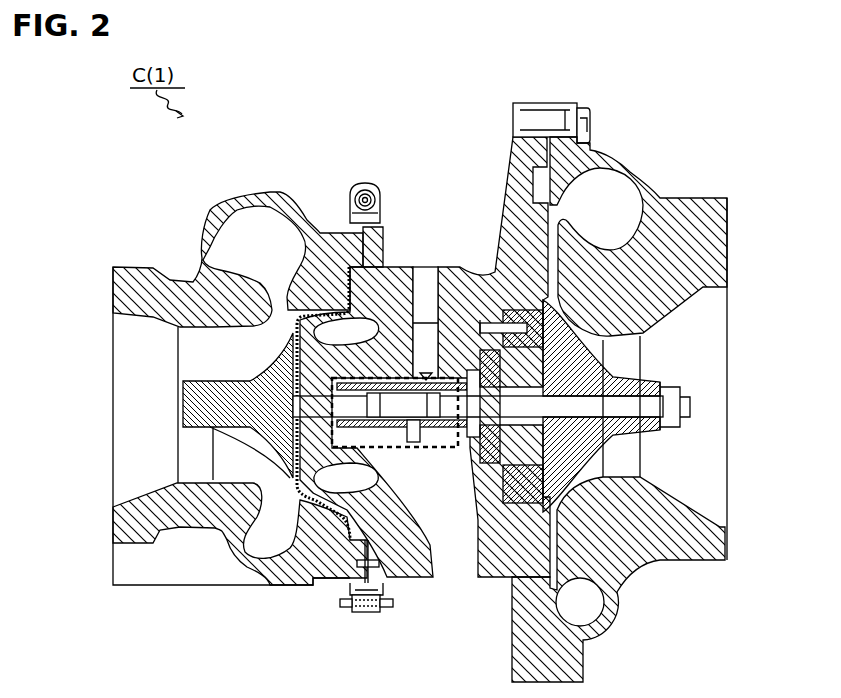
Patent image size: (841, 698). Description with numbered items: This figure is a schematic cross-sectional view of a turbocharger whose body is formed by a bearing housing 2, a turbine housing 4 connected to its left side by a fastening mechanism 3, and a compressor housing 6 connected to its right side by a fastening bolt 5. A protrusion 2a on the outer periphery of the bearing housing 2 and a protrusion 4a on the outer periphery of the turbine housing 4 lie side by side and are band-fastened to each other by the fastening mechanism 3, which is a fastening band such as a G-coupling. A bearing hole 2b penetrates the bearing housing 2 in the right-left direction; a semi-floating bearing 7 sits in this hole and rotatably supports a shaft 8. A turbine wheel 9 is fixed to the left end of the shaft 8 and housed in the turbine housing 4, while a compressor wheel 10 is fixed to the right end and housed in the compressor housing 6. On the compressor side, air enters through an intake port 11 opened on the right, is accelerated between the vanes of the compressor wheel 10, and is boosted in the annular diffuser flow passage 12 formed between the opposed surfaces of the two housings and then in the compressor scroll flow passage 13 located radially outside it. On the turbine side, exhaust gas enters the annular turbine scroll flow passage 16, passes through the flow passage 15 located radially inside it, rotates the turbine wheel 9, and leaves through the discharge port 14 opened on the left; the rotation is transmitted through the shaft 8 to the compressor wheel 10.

The bearing housing 2 is at (462, 262).
The protrusion 2a is at (383, 590).
The bearing hole 2b is at (441, 450).
The fastening mechanism 3 is at (375, 182).
The turbine housing 4 is at (307, 205).
The protrusion 4a is at (347, 589).
The fastening bolt 5 is at (577, 107).
The compressor housing 6 is at (693, 203).
The semi-floating bearing 7 is at (400, 373).
The shaft 8 is at (458, 450).
The turbine wheel 9 is at (213, 467).
The compressor wheel 10 is at (640, 367).
The intake port 11 is at (707, 300).
The diffuser flow passage 12 is at (550, 256).
The compressor scroll flow passage 13 is at (617, 173).
The discharge port 14 is at (113, 308).
The flow passage 15 is at (201, 266).
The turbine scroll flow passage 16 is at (244, 210).